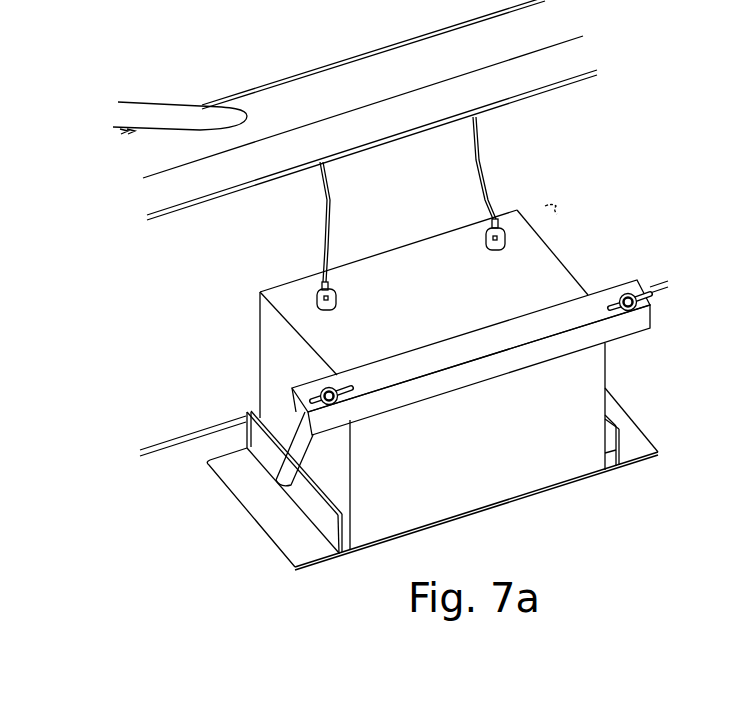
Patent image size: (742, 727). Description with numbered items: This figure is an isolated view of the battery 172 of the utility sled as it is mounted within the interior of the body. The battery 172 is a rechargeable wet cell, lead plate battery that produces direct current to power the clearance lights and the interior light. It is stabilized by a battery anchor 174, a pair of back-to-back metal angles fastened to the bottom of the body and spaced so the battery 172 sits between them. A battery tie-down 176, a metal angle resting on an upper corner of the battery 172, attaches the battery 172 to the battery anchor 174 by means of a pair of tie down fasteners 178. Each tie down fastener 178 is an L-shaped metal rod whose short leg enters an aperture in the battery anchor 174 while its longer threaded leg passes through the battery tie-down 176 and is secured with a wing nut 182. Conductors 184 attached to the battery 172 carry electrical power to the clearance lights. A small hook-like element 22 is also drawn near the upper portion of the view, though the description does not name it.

The ceiling hook 22 is at (556, 206).
The battery 172 is at (275, 330).
The battery anchor 174 is at (225, 465).
The battery tie-down 176 is at (618, 289).
The tie down fasteners 178 is at (276, 484).
The wing nut 182 is at (319, 393).
The conductors 184 is at (319, 206).